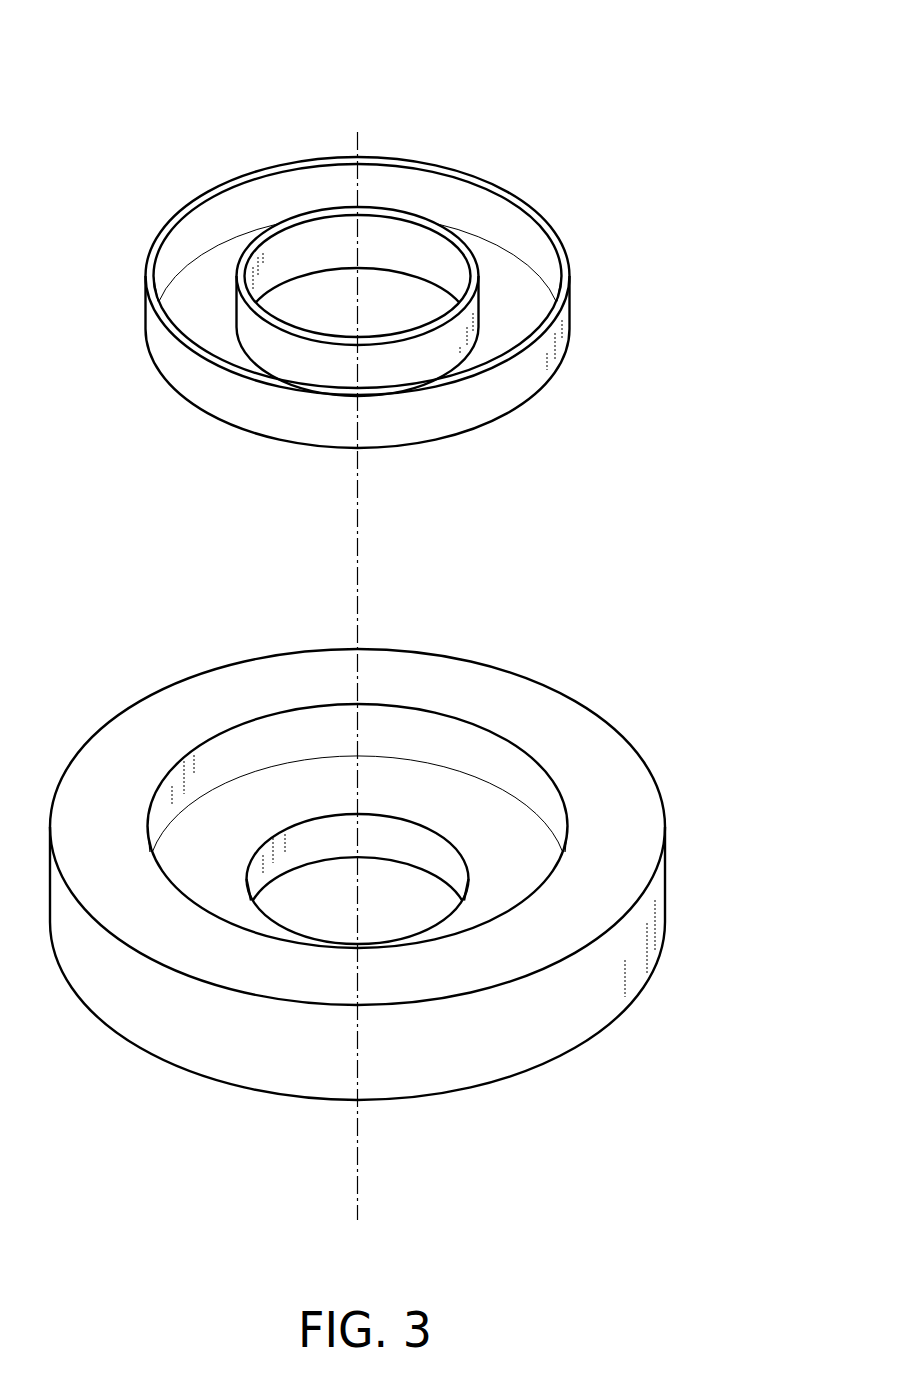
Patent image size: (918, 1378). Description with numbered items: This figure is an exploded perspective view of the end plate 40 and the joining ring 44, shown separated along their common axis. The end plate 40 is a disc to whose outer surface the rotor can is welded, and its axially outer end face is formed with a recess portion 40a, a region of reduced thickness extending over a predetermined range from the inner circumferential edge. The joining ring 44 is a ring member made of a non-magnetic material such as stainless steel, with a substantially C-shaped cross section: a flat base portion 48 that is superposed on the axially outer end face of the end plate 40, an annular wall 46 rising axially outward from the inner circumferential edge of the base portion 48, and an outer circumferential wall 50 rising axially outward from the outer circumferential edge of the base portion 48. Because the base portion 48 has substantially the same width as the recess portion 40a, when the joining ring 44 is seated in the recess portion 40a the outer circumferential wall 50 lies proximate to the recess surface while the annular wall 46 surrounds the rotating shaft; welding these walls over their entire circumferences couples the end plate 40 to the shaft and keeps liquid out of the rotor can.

The end plate 40 is at (409, 826).
The recess portion 40a is at (524, 867).
The joining ring 44 is at (325, 230).
The annular wall 46 is at (297, 352).
The base portion 48 is at (203, 304).
The outer circumferential wall 50 is at (470, 177).